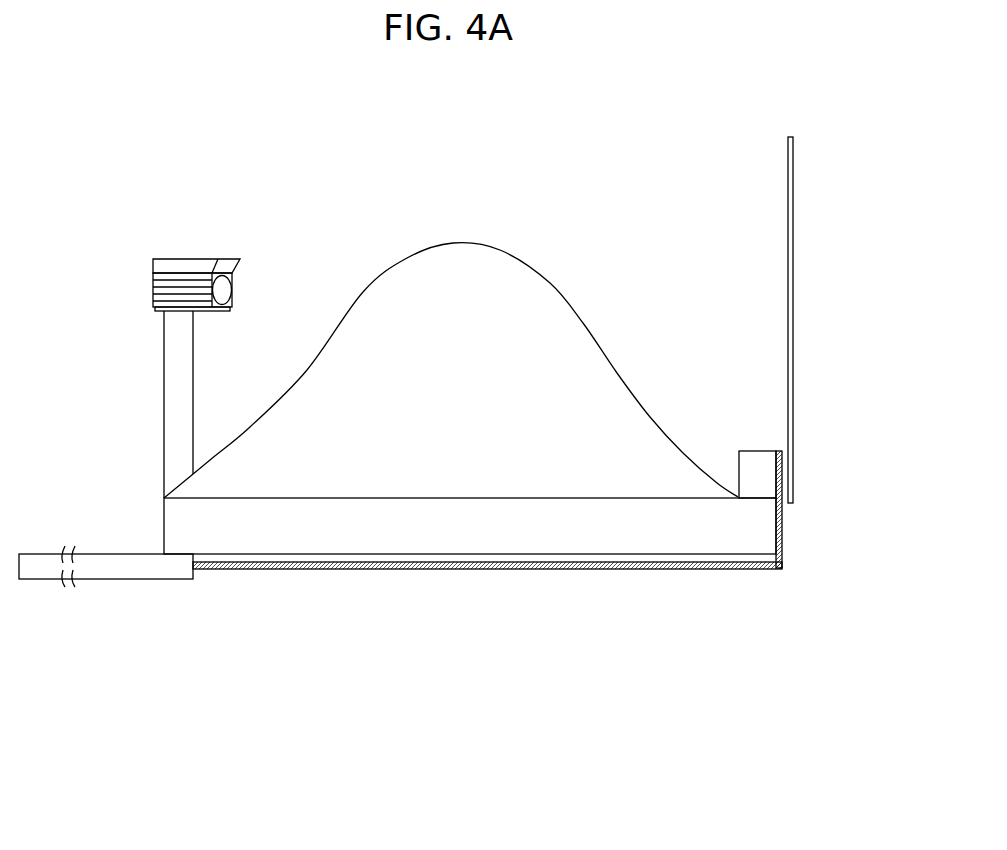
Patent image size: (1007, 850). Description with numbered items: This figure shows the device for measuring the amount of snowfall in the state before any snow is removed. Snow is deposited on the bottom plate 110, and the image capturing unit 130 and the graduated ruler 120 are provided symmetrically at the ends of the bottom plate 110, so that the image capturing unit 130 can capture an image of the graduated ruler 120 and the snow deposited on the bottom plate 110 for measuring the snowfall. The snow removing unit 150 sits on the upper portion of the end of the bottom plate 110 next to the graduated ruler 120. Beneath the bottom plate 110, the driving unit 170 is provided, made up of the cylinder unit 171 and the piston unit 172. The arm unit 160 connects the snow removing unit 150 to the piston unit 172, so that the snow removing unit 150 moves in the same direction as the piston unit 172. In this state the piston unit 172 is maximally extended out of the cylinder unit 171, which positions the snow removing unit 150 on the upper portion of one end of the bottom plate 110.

The bottom plate 110 is at (567, 532).
The graduated ruler 120 is at (790, 181).
The image capturing unit 130 is at (183, 258).
The snow removing unit 150 is at (752, 462).
The arm unit 160 is at (778, 533).
The driving unit 170 is at (382, 667).
The cylinder unit 171 is at (165, 570).
The piston unit 172 is at (382, 565).